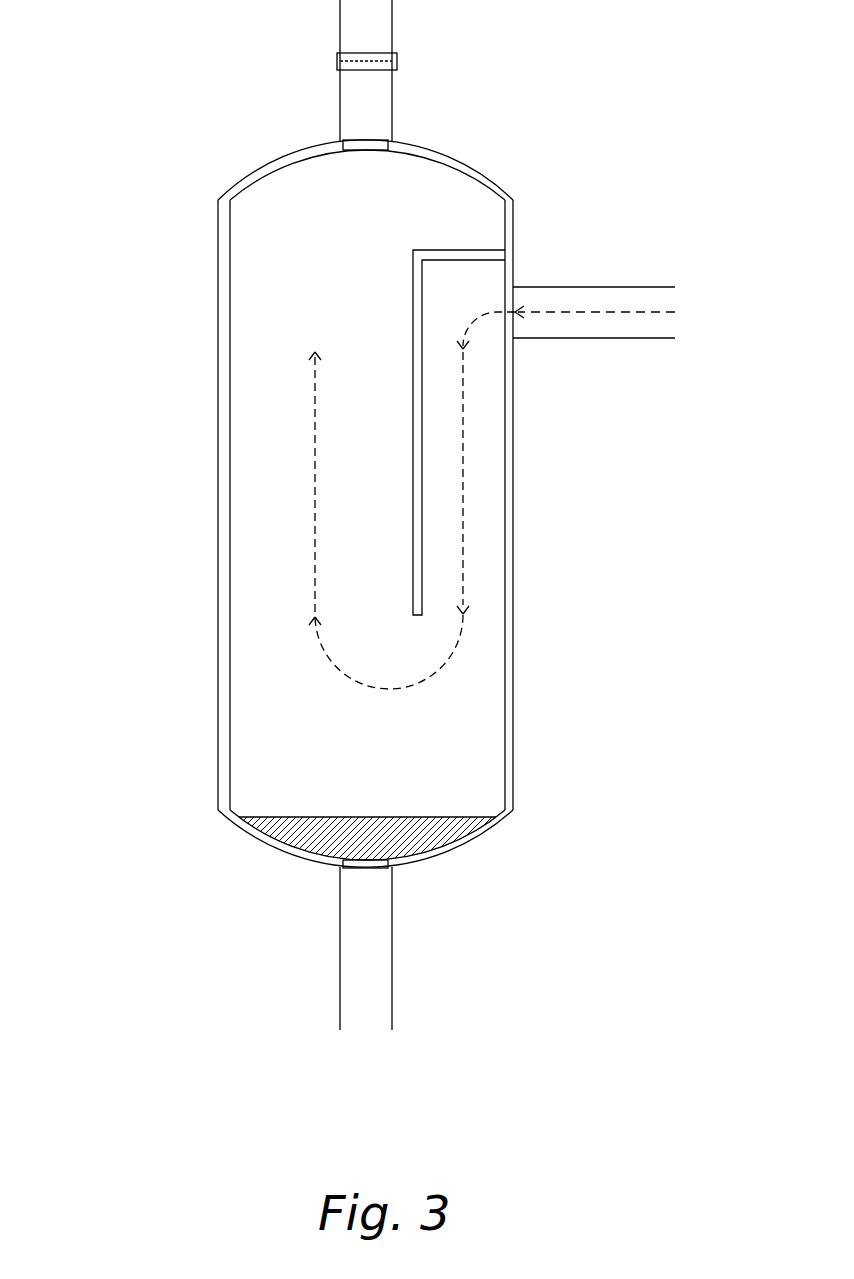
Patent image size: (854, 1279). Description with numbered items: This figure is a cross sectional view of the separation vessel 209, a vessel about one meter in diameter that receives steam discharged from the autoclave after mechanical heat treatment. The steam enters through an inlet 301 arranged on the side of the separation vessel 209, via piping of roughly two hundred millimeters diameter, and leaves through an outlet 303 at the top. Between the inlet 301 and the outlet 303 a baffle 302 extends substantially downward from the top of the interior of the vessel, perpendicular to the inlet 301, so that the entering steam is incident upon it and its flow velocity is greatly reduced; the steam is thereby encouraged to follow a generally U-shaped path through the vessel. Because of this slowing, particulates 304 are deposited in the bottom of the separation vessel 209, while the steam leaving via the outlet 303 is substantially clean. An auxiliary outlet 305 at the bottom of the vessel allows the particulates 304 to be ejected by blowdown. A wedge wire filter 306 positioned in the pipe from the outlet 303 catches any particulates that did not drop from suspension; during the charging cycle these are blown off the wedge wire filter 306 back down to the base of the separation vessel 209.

The separation vessel 209 is at (212, 171).
The inlet 301 is at (513, 330).
The baffle 302 is at (413, 385).
The outlet 303 is at (384, 145).
The particulates 304 is at (417, 817).
The auxiliary outlet 305 is at (390, 866).
The wedge wire filter 306 is at (385, 57).